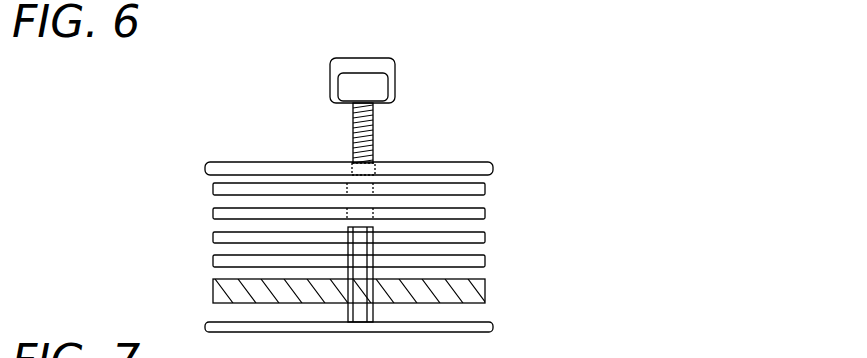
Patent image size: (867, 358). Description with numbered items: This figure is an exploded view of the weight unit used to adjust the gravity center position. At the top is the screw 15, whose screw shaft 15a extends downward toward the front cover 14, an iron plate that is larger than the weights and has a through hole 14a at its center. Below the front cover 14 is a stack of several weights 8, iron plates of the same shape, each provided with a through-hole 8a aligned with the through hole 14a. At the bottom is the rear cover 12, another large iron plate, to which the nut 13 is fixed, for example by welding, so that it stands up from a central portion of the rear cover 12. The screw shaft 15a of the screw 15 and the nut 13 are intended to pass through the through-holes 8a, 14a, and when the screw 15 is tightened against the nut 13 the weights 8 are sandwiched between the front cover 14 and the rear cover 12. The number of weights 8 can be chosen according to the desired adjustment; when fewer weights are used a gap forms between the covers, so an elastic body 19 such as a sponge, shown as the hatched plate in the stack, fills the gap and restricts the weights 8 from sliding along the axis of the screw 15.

The screw 15 is at (373, 83).
The screw shaft 15a is at (353, 130).
The front cover 14 is at (447, 162).
The through hole 14a is at (373, 165).
The weights 8 is at (485, 258).
The through-hole 8a is at (347, 192).
The elastic body 19 is at (485, 288).
The nut 13 is at (370, 312).
The rear cover 12 is at (487, 328).